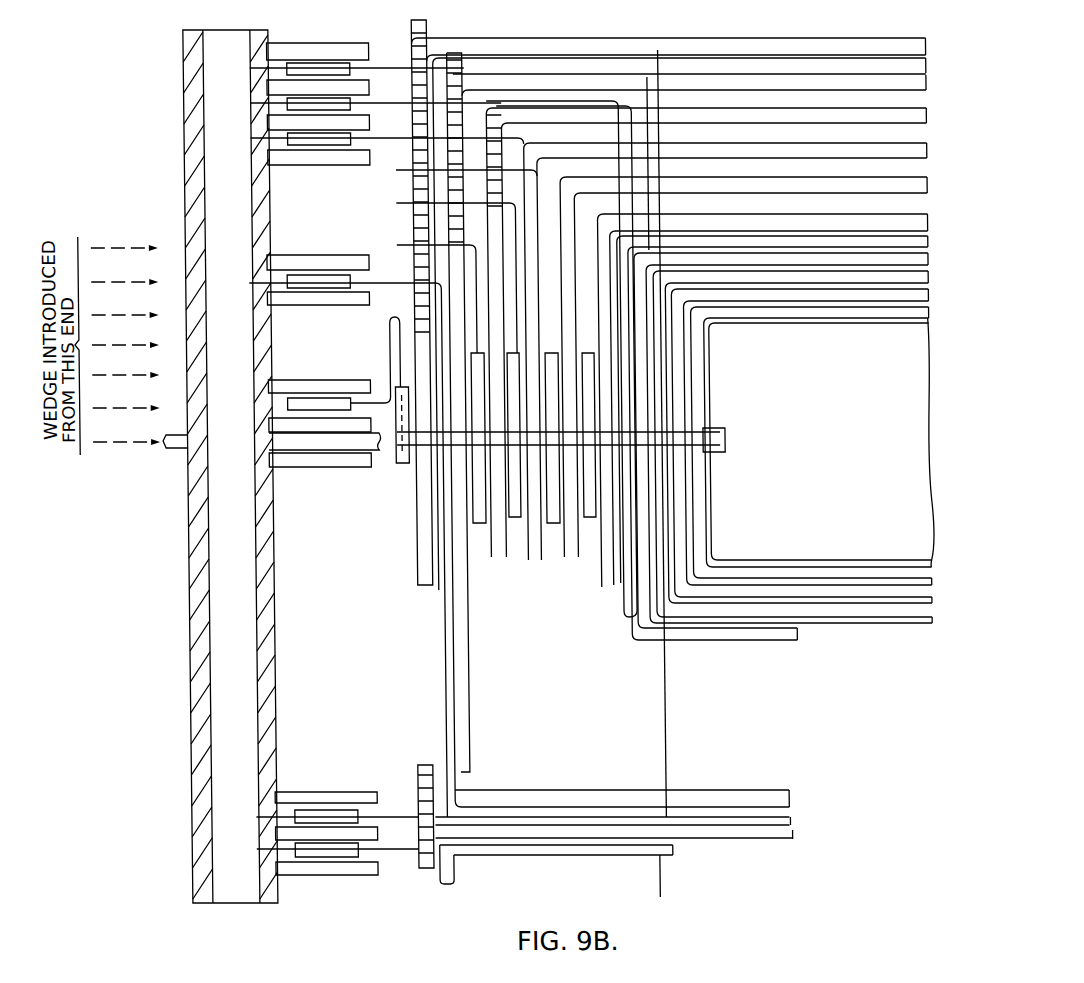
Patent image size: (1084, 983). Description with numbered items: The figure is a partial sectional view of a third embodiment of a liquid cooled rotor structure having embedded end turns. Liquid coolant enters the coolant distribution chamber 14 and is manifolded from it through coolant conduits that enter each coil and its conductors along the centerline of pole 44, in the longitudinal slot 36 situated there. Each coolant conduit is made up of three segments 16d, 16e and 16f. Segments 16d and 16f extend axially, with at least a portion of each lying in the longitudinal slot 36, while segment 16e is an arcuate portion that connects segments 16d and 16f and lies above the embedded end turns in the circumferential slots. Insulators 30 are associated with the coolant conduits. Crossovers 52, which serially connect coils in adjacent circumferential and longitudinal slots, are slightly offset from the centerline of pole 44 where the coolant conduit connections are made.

The coolant distribution chamber 14 is at (220, 632).
The coolant conduit segment 16d is at (389, 281).
The coolant conduit segment 16e is at (433, 300).
The coolant conduit segment 16f is at (462, 441).
The insulators 30 is at (328, 851).
The longitudinal slot 36 is at (681, 130).
The pole 44 is at (860, 535).
The crossovers 52 is at (482, 408).